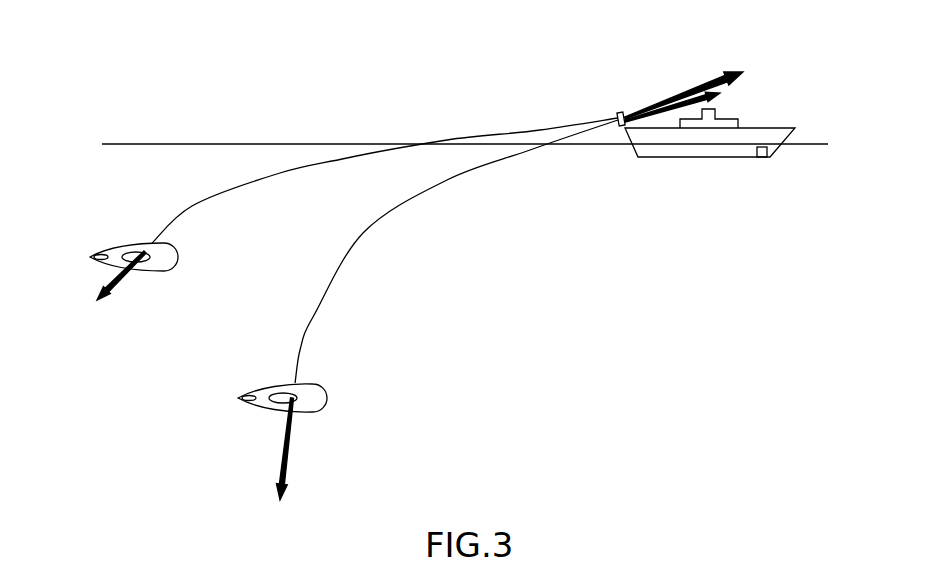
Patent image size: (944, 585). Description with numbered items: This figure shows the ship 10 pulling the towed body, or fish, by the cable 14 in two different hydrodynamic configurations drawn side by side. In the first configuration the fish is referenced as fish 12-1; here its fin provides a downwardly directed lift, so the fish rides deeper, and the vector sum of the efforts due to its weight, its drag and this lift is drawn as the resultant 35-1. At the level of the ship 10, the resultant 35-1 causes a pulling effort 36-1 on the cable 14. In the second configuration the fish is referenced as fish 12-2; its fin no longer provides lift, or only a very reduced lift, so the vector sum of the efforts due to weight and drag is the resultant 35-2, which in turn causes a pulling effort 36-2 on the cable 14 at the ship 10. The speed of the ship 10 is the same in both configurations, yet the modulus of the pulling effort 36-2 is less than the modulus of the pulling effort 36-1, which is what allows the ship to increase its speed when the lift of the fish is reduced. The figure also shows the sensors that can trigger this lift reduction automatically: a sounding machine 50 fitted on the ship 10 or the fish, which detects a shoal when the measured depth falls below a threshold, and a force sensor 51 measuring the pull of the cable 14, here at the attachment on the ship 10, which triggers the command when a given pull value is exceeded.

The ship 10 is at (703, 148).
The sounding machine 50 is at (760, 157).
The force sensor 51 is at (618, 114).
The pulling effort 36-1 is at (713, 82).
The pulling effort 36-2 is at (712, 101).
The cable 14 is at (343, 158).
The fish in first configuration 12-1 is at (327, 398).
The fish in second configuration 12-2 is at (178, 258).
The resultant 35-1 is at (292, 435).
The resultant 35-2 is at (130, 277).